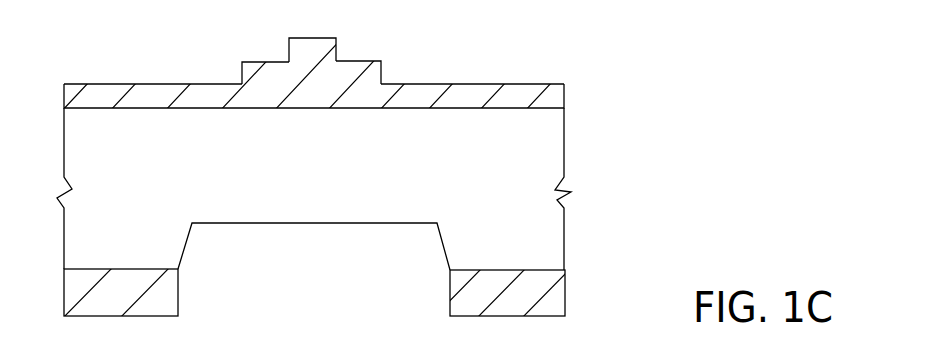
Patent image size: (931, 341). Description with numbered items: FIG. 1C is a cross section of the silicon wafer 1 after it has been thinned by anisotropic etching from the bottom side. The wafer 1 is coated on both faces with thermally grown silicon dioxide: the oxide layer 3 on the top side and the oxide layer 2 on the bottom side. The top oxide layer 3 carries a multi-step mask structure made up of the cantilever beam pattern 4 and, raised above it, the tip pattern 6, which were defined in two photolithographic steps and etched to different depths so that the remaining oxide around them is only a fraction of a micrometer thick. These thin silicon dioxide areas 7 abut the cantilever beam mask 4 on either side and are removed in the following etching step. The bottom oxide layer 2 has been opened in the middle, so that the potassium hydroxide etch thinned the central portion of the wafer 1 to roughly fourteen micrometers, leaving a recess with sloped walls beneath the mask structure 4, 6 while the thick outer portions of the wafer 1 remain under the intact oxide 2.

The silicon wafer 1 is at (543, 153).
The oxide layer on bottom side 2 is at (550, 302).
The oxide layer on top side 3 is at (550, 95).
The cantilever beam pattern 4 is at (355, 68).
The tip pattern 6 is at (311, 43).
The silicon dioxide areas 7 is at (168, 75).